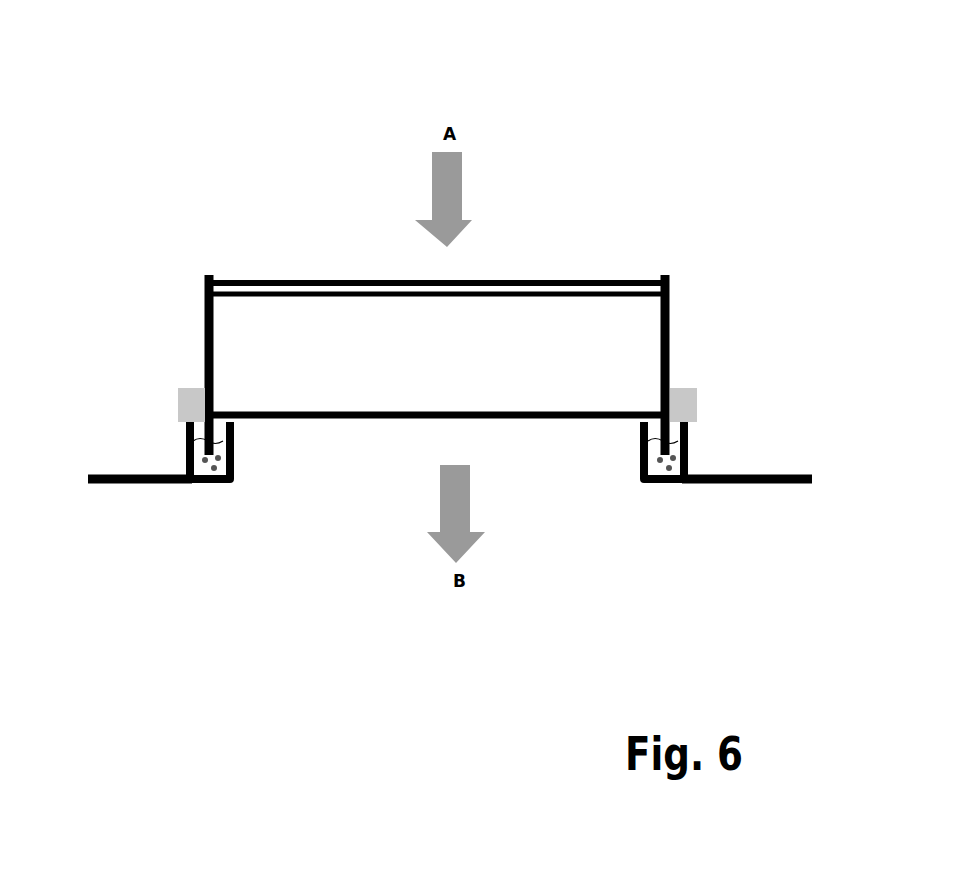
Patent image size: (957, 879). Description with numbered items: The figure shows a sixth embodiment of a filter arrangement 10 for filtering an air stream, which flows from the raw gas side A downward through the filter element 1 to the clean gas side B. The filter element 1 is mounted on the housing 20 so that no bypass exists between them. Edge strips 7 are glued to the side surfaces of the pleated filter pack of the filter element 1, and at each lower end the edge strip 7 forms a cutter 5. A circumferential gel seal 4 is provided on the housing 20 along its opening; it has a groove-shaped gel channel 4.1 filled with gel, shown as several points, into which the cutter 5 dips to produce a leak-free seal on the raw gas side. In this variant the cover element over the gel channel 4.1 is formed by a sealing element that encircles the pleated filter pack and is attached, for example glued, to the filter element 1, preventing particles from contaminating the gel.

The filter arrangement 10 is at (749, 146).
The filter element 1 is at (572, 278).
The edge strip 7 is at (674, 344).
The cutter 5 is at (674, 437).
The gel seal 4 is at (201, 450).
The gel channel 4.1 is at (687, 467).
The housing 20 is at (812, 481).